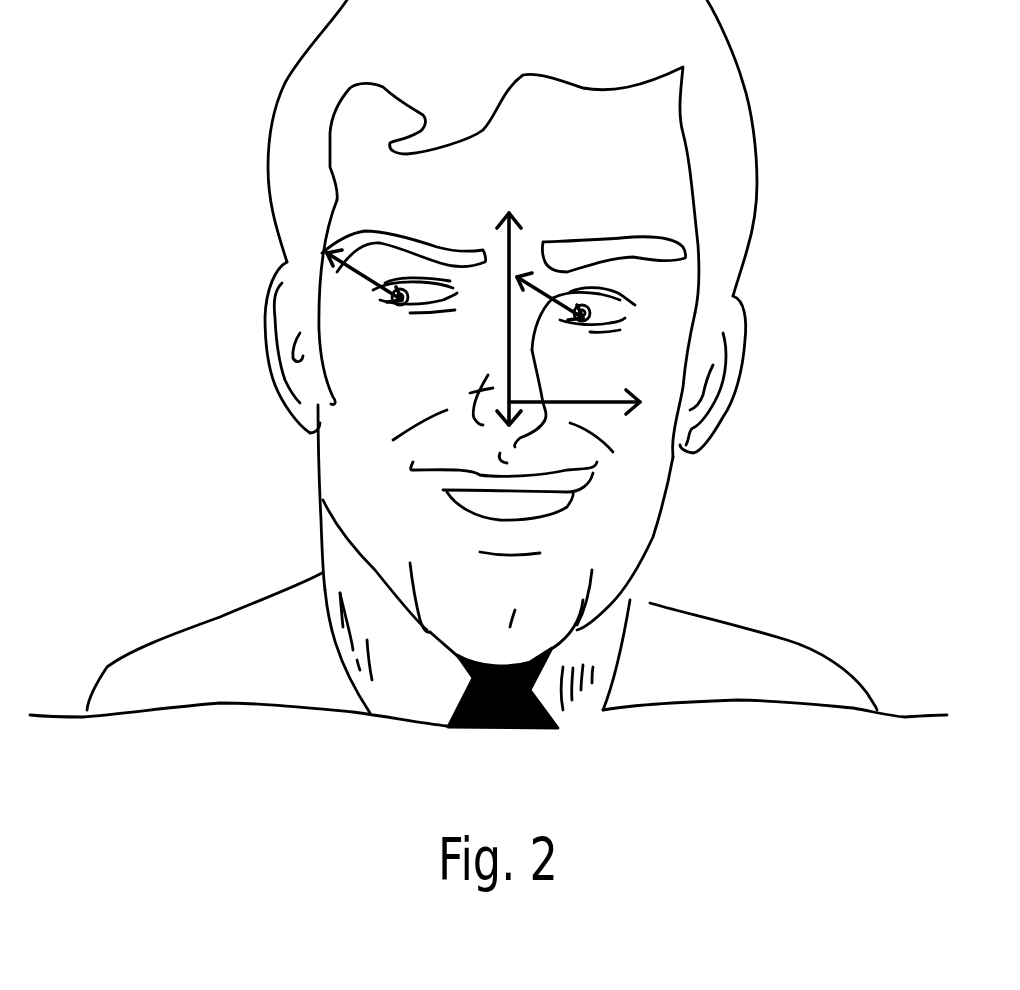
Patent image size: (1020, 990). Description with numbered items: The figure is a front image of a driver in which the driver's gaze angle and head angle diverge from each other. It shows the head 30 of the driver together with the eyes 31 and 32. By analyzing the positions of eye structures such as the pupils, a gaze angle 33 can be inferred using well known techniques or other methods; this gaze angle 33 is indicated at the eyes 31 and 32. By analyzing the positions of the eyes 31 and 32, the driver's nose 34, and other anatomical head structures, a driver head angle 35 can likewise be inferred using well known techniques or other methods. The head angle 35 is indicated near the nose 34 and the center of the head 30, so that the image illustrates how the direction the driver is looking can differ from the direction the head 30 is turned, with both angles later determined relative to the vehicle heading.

The head 30 is at (767, 315).
The eye 31 is at (423, 315).
The eye 32 is at (590, 327).
The gaze angle 33 is at (380, 292).
The nose 34 is at (495, 392).
The driver head angle 35 is at (507, 427).